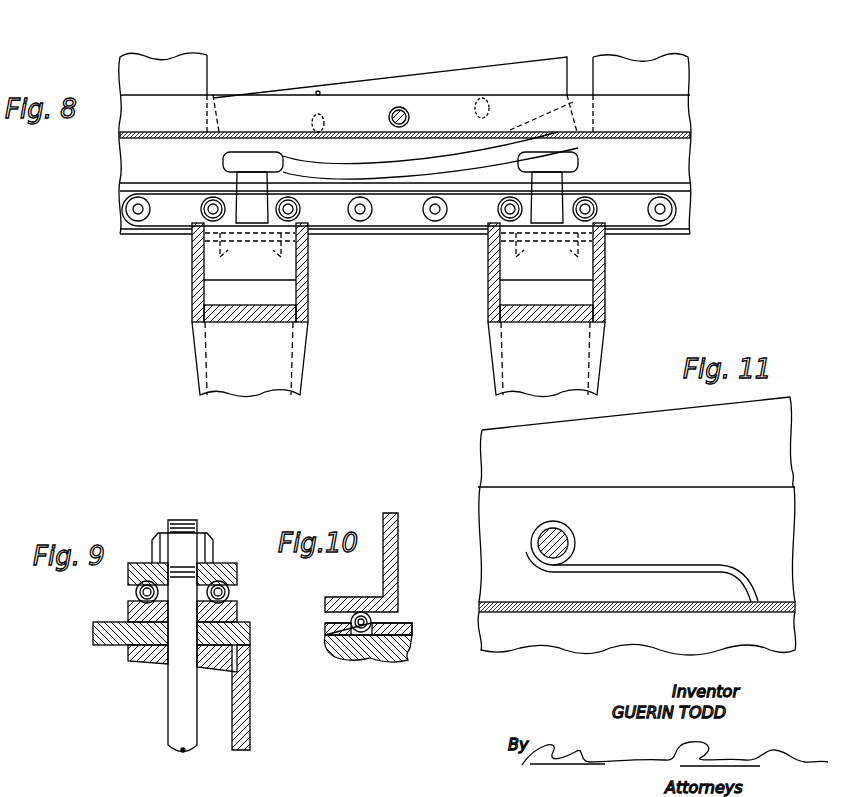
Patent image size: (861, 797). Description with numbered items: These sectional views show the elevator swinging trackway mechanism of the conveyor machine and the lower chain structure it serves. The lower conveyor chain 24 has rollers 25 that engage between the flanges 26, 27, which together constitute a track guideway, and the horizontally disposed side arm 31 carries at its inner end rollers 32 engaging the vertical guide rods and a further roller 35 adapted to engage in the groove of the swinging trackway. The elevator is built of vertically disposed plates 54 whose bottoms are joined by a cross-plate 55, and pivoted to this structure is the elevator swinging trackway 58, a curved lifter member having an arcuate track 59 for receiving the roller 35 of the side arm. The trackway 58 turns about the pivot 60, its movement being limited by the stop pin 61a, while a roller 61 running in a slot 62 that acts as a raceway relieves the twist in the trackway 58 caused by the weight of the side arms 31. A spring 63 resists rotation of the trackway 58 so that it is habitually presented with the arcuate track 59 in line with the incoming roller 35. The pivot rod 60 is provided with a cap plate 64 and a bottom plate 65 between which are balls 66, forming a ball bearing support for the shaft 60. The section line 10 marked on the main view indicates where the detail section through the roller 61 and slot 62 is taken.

In FIG. 8, the section line 10— 10 is at (302, 107).
In FIG. 8, the lower conveyor chain 24 is at (398, 212).
In FIG. 8, the rollers 25 is at (361, 230).
In FIG. 8, the flange 26 is at (668, 167).
In FIG. 8, the flange 27 is at (433, 238).
In FIG. 8, the side arm 31 is at (275, 362).
In FIG. 8, the roller 32 is at (193, 262).
In FIG. 8, the roller 35 is at (222, 162).
In FIG. 8, the vertically disposed plate 54 is at (662, 118).
In FIG. 11, the vertically disposed plate 54 is at (777, 545).
In FIG. 9, the vertically disposed plate 54 is at (248, 697).
In FIG. 10, the vertically disposed plate 54 is at (390, 563).
In FIG. 8, the cross-plate 55 is at (165, 63).
In FIG. 8, the elevator swinging trackway 58 is at (349, 87).
In FIG. 11, the elevator swinging trackway 58 is at (772, 436).
In FIG. 10, the elevator swinging trackway 58 is at (382, 660).
In FIG. 8, the arcuate track 59 is at (450, 152).
In FIG. 8, the pivot 60 is at (402, 107).
In FIG. 11, the pivot 60 is at (570, 537).
In FIG. 9, the pivot 60 is at (180, 703).
In FIG. 8, the roller 61 is at (484, 112).
In FIG. 10, the roller 61 is at (372, 618).
In FIG. 8, the stop pin 61a is at (316, 92).
In FIG. 8, the slot 62 is at (481, 98).
In FIG. 10, the slot 62 is at (386, 631).
In FIG. 8, the spring 63 is at (394, 108).
In FIG. 11, the spring 63 is at (711, 566).
In FIG. 9, the cap plate 64 is at (223, 571).
In FIG. 9, the bottom plate 65 is at (238, 614).
In FIG. 9, the balls 66 is at (236, 593).